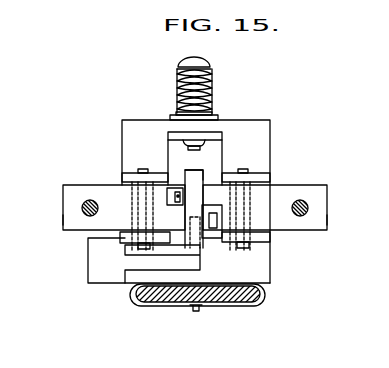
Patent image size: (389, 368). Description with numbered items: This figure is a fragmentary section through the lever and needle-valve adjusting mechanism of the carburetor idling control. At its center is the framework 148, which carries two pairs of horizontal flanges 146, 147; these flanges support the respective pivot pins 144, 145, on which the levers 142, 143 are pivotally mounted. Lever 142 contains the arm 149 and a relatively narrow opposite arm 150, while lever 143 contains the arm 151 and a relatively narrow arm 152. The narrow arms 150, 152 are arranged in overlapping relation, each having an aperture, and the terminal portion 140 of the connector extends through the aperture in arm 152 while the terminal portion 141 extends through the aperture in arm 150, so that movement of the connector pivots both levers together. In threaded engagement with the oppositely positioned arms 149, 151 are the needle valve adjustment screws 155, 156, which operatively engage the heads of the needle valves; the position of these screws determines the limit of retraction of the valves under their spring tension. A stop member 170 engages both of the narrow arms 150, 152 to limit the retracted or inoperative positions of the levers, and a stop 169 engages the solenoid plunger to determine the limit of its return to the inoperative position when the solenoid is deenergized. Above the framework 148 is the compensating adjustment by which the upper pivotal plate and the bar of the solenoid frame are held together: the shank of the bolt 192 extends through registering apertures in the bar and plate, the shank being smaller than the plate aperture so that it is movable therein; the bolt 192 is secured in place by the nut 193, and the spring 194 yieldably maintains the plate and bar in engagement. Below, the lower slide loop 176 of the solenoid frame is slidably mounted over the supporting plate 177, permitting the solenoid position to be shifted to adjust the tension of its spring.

The framework 148 is at (263, 119).
The bolt 192 is at (197, 60).
The spring 194 is at (206, 96).
The nut 193 is at (205, 144).
The narrow arm 152 is at (215, 192).
The stop member 170 is at (188, 172).
The lever 142 is at (68, 184).
The arm 149 is at (72, 218).
The needle valve adjustment screw 155 is at (82, 206).
The lever 143 is at (320, 184).
The arm 151 is at (323, 218).
The needle valve adjustment screw 156 is at (308, 207).
The horizontal flanges 146 is at (132, 174).
The pivot pin 144 is at (142, 169).
The horizontal flanges 147 is at (263, 177).
The pivot pin 145 is at (241, 169).
The terminal portion 140 is at (178, 196).
The narrow arm 150 is at (208, 234).
The terminal portion 141 is at (213, 222).
The stop 169 is at (142, 263).
The slide loop 176 is at (250, 310).
The supporting plate 177 is at (169, 299).